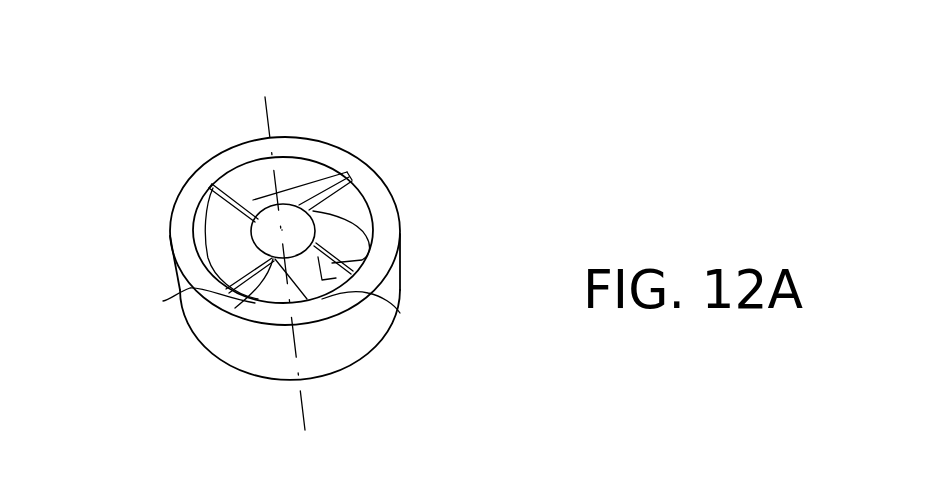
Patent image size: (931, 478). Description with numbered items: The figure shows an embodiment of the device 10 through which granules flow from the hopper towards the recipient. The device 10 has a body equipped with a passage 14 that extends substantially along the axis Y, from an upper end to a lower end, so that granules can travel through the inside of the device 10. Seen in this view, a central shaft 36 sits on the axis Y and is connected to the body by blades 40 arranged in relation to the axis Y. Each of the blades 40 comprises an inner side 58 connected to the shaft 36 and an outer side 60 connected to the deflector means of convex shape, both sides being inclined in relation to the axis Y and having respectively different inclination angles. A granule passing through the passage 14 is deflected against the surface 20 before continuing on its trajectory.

The device 10 is at (321, 260).
The passage 14 is at (400, 313).
The surface 20 is at (353, 197).
The central shaft 36 is at (262, 234).
The blades 40 is at (221, 189).
The inner side 58 is at (235, 308).
The outer side 60 is at (268, 304).
The axis Y is at (267, 111).